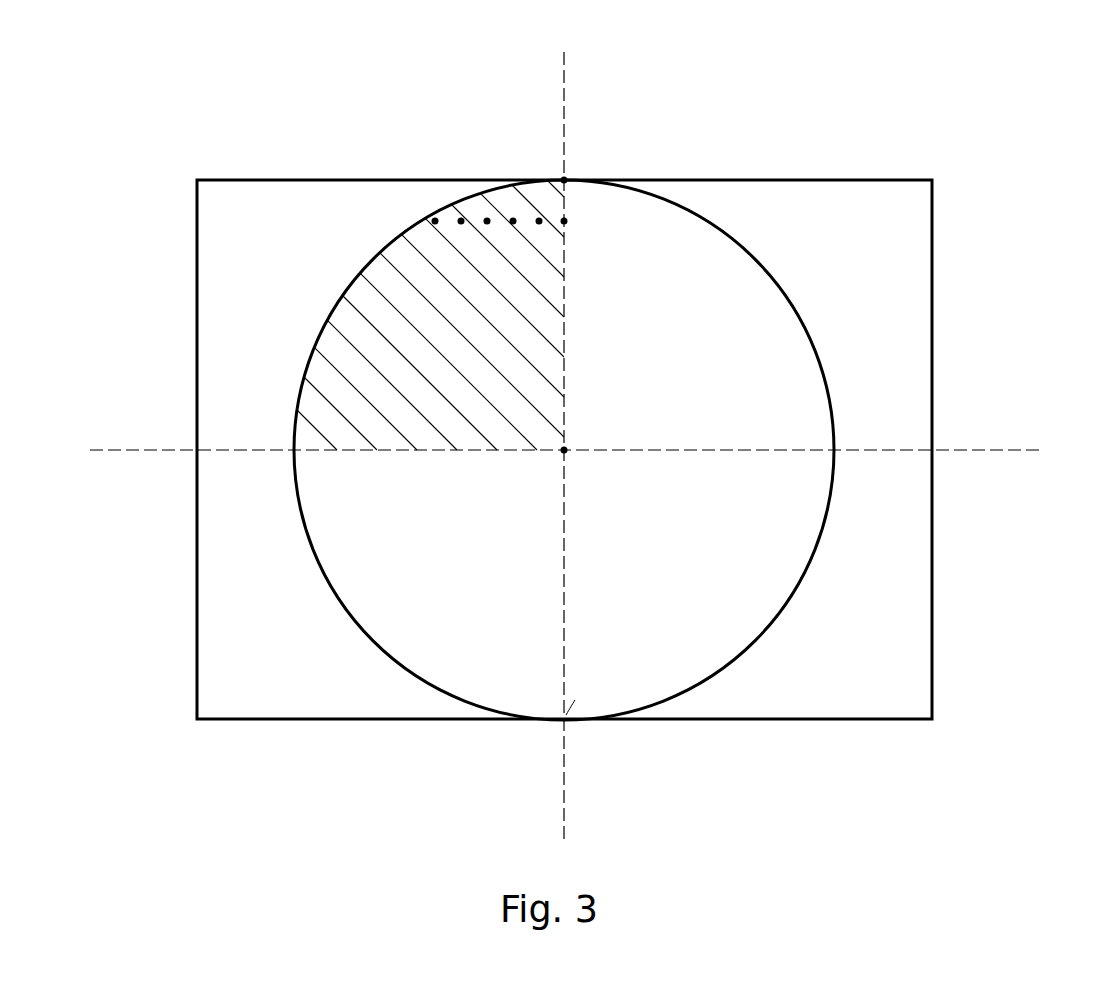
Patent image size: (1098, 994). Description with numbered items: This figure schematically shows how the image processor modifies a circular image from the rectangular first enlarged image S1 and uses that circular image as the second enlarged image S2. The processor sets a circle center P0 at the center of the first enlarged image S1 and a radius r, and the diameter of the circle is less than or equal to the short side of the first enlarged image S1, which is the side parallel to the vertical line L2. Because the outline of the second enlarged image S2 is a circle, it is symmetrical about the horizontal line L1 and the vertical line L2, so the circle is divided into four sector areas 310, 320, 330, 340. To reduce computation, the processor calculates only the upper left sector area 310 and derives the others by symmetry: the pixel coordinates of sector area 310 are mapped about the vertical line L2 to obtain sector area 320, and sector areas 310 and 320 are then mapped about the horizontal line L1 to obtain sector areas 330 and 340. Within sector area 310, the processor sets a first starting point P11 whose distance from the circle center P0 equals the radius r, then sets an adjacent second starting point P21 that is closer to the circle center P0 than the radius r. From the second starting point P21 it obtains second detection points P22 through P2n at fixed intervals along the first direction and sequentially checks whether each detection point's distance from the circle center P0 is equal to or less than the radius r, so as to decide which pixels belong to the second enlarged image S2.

The first enlarged image S1 is at (932, 280).
The second enlarged image S2 is at (649, 450).
The horizontal line L1 is at (587, 451).
The vertical line L2 is at (564, 428).
The circle center P0 is at (577, 468).
The radius r is at (582, 585).
The first starting point P11 is at (567, 178).
The second starting point P21 is at (567, 221).
The second detection point P22 is at (539, 218).
The second detection point P2n is at (435, 218).
The sector area 310 is at (478, 353).
The sector area 320 is at (696, 353).
The sector area 330 is at (478, 580).
The sector area 340 is at (803, 575).